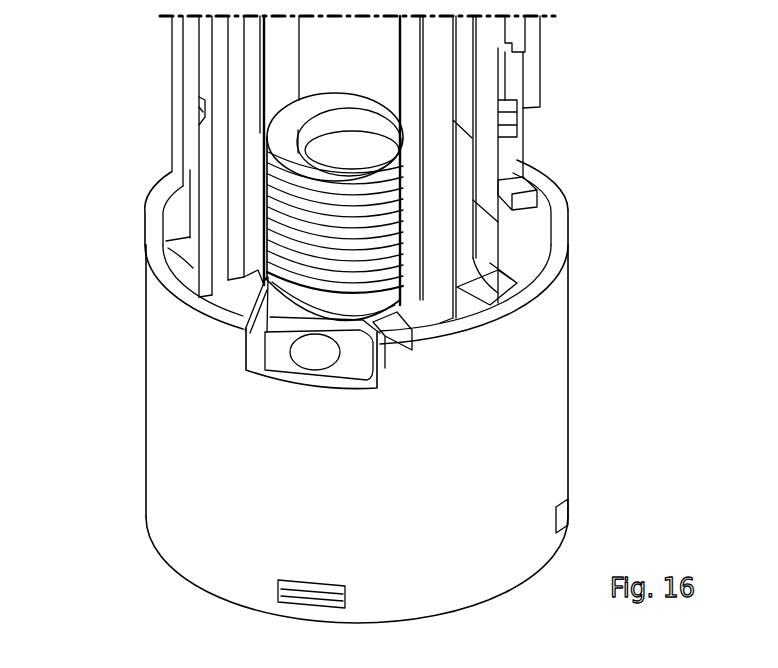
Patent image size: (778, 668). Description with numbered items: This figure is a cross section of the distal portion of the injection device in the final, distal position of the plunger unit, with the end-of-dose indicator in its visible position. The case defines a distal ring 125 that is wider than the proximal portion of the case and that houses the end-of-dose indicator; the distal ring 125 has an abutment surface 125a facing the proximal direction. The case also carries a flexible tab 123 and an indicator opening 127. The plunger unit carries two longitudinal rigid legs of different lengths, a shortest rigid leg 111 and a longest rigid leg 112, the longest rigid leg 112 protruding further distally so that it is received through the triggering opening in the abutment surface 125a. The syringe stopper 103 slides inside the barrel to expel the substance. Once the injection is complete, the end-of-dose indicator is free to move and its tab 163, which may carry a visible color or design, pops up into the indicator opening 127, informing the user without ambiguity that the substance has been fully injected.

The stopper 103 is at (350, 238).
The shortest rigid leg 111 is at (172, 55).
The longest rigid leg 112 is at (208, 131).
The flexible tab 123 is at (192, 240).
The distal ring 125 is at (222, 505).
The abutment surface 125a is at (520, 297).
The indicator opening 127 is at (375, 323).
The tab 163 is at (275, 348).